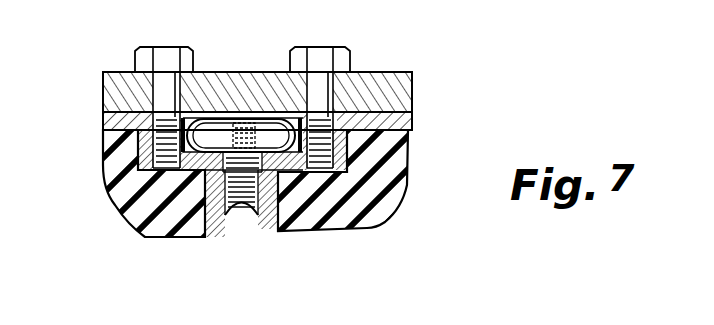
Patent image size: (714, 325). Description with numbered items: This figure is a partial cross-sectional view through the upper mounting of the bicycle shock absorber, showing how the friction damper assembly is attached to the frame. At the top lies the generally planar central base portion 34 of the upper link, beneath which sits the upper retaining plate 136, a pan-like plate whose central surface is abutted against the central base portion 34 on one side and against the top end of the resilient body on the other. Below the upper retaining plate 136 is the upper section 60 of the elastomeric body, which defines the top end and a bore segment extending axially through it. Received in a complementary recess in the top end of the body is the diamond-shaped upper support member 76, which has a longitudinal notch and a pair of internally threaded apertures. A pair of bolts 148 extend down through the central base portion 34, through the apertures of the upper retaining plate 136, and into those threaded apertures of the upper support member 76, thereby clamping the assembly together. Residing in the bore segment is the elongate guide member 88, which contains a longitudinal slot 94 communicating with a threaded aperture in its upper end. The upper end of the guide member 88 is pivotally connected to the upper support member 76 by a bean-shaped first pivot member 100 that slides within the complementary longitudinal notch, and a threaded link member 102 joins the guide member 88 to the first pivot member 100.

The central base portion 34 is at (386, 84).
The upper retaining plate 136 is at (404, 126).
The upper support member 76 is at (393, 153).
The upper section 60 is at (388, 203).
The guide member 88 is at (166, 185).
The slot 94 is at (229, 226).
The first pivot member 100 is at (215, 118).
The link member 102 is at (273, 138).
The bolts 148 is at (162, 54).